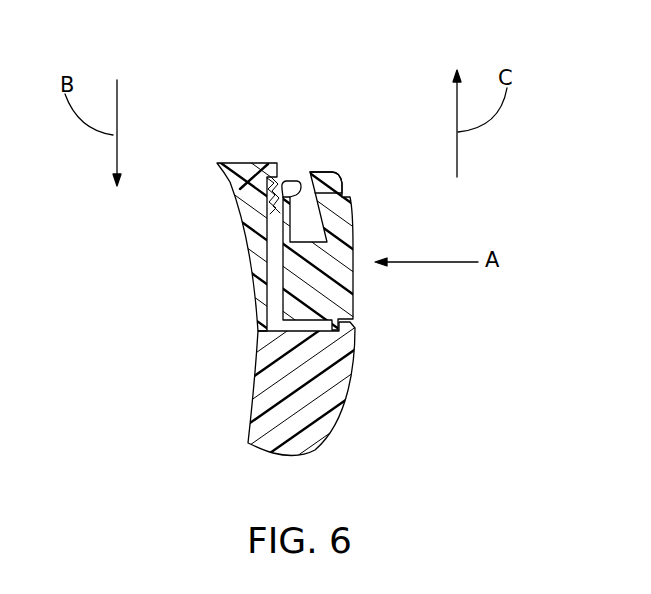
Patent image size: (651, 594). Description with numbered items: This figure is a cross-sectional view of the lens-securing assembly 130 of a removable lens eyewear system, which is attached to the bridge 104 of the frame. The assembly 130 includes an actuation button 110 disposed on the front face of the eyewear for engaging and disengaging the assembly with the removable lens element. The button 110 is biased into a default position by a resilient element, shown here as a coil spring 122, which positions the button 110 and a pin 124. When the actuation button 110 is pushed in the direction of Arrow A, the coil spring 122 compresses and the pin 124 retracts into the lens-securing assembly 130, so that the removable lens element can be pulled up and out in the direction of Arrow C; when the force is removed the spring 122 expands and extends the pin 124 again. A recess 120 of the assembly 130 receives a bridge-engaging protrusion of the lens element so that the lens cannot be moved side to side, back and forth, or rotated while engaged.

The bridge 104 is at (232, 190).
The actuation button 110 is at (354, 245).
The recess 120 is at (315, 173).
The coil spring 122 is at (250, 236).
The pin 124 is at (292, 185).
The lens-securing assembly 130 is at (394, 356).